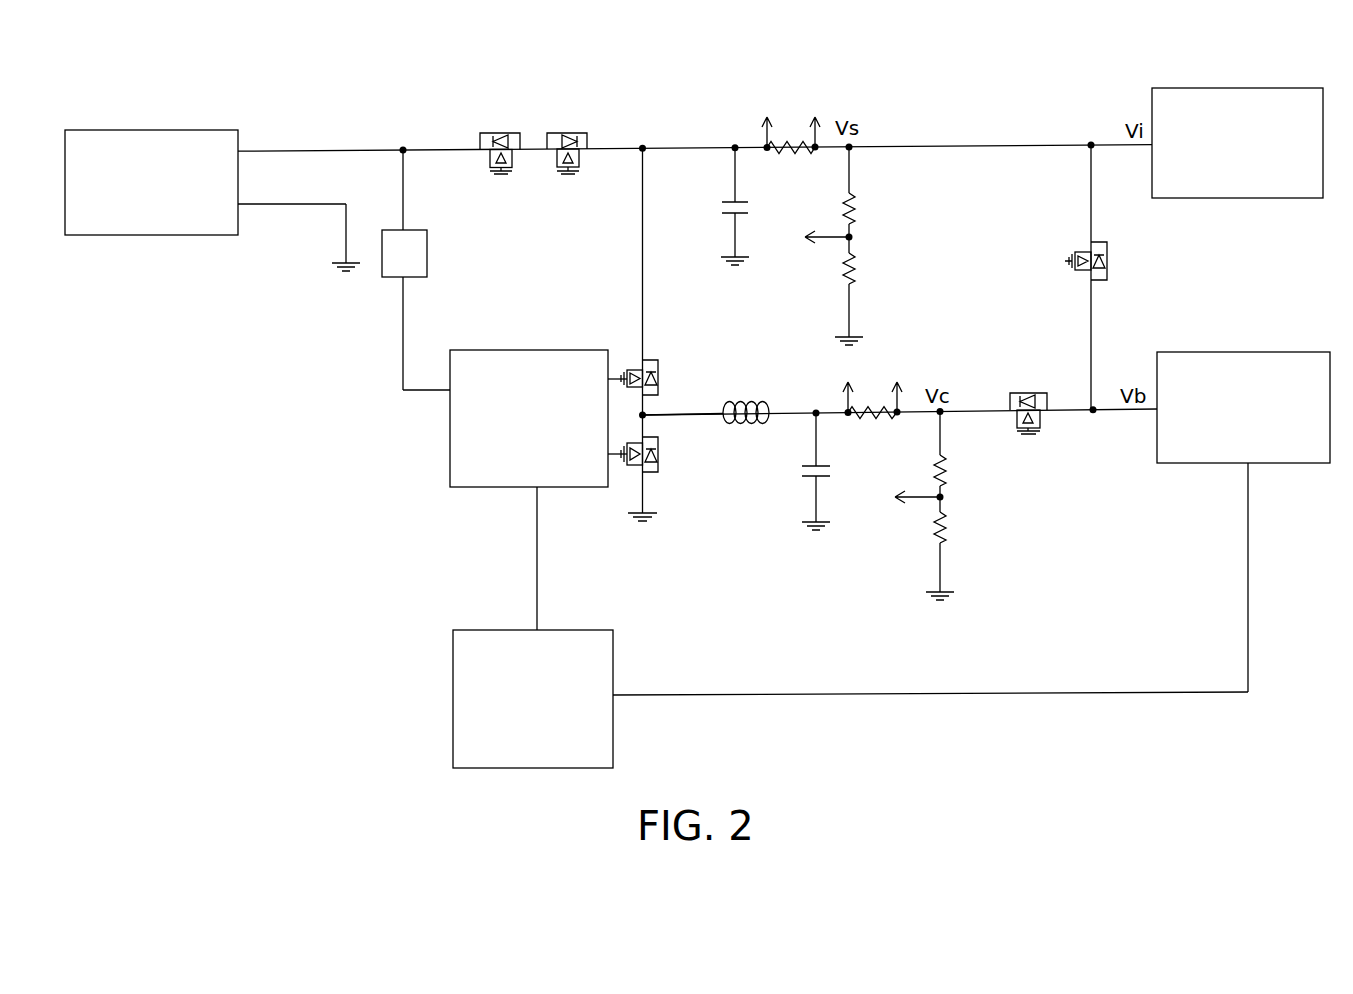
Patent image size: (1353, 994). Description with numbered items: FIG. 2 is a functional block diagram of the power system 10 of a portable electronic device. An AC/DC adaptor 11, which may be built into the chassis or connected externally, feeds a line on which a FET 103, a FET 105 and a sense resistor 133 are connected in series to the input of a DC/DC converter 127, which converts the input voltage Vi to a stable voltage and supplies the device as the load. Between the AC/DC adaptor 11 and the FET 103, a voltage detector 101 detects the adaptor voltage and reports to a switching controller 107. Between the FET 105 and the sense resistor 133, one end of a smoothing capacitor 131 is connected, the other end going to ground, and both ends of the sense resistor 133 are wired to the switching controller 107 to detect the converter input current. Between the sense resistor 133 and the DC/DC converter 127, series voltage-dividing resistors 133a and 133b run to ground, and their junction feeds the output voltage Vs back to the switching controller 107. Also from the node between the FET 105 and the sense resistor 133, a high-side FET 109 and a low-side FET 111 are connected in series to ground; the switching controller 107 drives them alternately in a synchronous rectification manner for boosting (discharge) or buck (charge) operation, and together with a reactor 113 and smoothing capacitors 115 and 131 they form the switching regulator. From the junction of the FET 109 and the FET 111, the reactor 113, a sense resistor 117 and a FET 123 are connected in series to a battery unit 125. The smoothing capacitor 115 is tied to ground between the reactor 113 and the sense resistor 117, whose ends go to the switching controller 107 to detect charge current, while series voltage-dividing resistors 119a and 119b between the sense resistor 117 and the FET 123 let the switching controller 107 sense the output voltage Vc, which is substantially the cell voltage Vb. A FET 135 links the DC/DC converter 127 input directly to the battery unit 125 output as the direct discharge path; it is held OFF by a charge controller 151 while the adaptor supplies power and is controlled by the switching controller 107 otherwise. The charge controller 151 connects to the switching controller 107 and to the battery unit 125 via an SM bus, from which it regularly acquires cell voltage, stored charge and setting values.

The power system 10 is at (364, 122).
The AC/DC adaptor 11 is at (178, 130).
The voltage detector 101 is at (427, 232).
The FET 103 is at (491, 133).
The FET 105 is at (565, 133).
The switching controller 107 is at (545, 350).
The high-side FET 109 is at (659, 373).
The low-side FET 111 is at (659, 456).
The reactor 113 is at (756, 403).
The smoothing capacitor 115 is at (829, 467).
The sense resistor 117 is at (871, 406).
The voltage-dividing resistor 119a is at (955, 481).
The voltage-dividing resistor 119b is at (956, 526).
The FET 123 is at (1023, 393).
The battery unit 125 is at (1283, 352).
The DC/DC converter 127 is at (1281, 88).
The smoothing capacitor 131 is at (749, 203).
The sense resistor 133 is at (790, 141).
The voltage-dividing resistor 133a is at (861, 219).
The voltage-dividing resistor 133b is at (859, 267).
The FET 135 is at (1108, 260).
The charge controller 151 is at (571, 630).